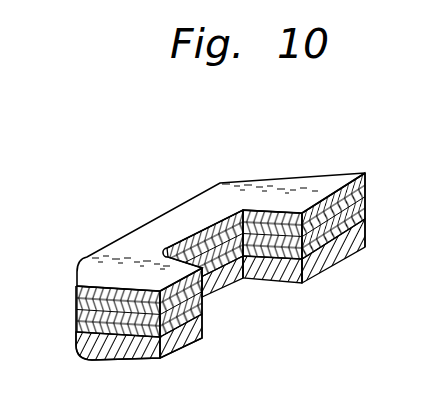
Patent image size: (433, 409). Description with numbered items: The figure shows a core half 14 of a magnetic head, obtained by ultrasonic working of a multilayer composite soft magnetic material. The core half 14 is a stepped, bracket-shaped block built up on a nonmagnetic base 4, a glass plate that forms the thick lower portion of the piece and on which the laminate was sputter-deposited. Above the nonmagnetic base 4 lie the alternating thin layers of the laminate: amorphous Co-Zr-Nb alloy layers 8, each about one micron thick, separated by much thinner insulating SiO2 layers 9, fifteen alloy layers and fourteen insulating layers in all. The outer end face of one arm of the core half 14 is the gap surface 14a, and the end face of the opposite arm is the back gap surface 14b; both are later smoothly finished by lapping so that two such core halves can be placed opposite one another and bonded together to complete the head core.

The core half 14 is at (89, 207).
The gap surface 14a is at (178, 314).
The back gap surface 14b is at (327, 224).
The Co87Zr5Nb8 layers 8 is at (365, 173).
The SiO2 layers 9 is at (76, 317).
The nonmagnetic base 4 is at (365, 235).